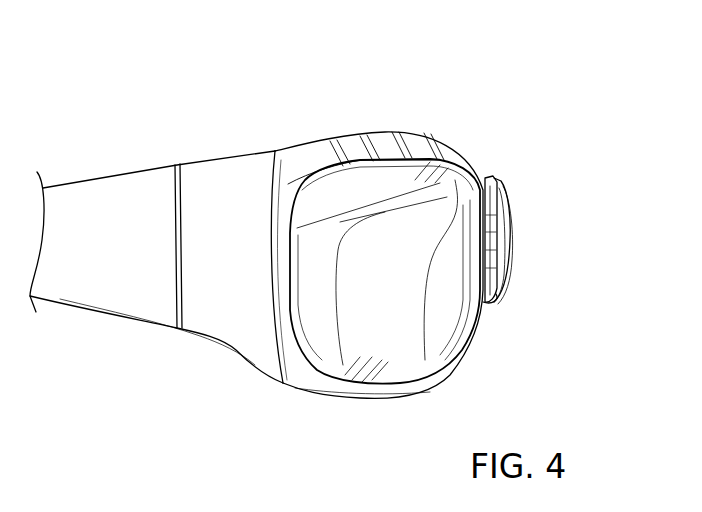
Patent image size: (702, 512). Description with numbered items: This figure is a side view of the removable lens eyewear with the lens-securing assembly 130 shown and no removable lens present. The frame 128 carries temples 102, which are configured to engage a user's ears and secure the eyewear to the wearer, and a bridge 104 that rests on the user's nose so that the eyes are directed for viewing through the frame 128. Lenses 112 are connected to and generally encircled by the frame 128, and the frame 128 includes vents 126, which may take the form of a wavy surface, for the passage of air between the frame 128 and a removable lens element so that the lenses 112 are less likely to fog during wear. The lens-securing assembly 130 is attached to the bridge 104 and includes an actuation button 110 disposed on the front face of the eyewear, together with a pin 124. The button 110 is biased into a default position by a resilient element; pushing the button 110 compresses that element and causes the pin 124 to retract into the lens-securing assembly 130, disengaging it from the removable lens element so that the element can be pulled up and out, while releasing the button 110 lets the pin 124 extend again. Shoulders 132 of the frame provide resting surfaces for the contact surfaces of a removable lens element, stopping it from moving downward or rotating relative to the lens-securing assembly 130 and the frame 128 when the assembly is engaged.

The temples 102 is at (133, 185).
The bridge 104 is at (481, 300).
The actuation button 110 is at (512, 213).
The lenses 112 is at (408, 345).
The pin 124 is at (483, 175).
The vents 126 is at (380, 132).
The frame 128 is at (312, 123).
The lens-securing assembly 130 is at (530, 250).
The shoulders 132 is at (500, 178).